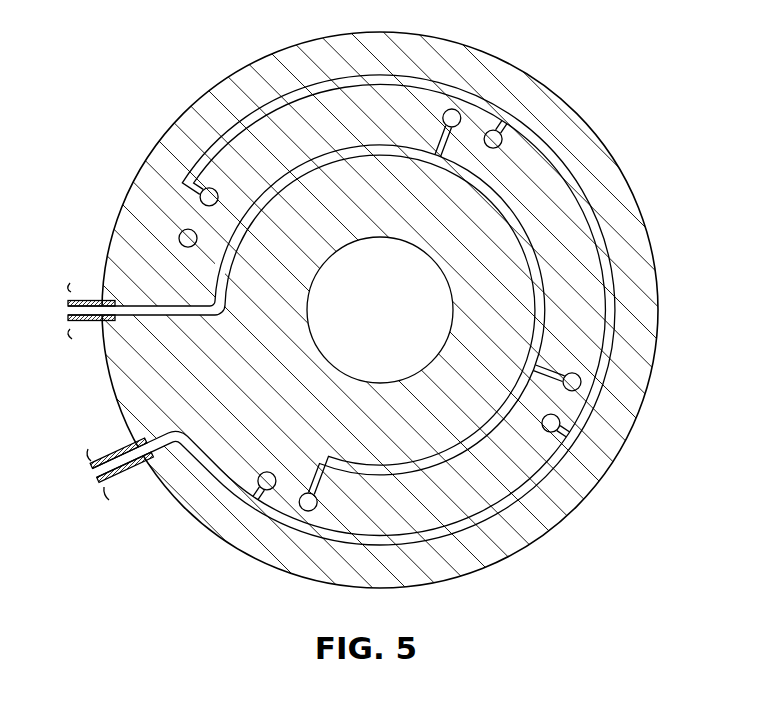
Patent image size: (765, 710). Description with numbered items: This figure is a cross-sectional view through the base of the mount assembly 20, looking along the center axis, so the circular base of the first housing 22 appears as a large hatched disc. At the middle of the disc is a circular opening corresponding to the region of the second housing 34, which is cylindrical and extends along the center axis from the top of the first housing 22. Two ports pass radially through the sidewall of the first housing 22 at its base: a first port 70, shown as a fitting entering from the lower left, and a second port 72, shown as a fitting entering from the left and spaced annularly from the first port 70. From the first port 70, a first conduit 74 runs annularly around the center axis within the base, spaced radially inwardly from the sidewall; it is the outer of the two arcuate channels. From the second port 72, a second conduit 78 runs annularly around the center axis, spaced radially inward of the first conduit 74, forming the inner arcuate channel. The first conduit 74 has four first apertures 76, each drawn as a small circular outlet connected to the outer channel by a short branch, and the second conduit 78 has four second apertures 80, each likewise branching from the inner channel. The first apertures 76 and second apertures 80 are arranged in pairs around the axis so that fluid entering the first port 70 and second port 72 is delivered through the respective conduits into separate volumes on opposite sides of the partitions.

The mount assembly 20 is at (632, 78).
The first housing 22 is at (645, 210).
The second housing 34 is at (327, 360).
The first port 70 is at (134, 470).
The second port 72 is at (90, 325).
The first conduit 74 is at (488, 562).
The first apertures 76 is at (500, 131).
The second conduit 78 is at (558, 518).
The second apertures 80 is at (453, 109).